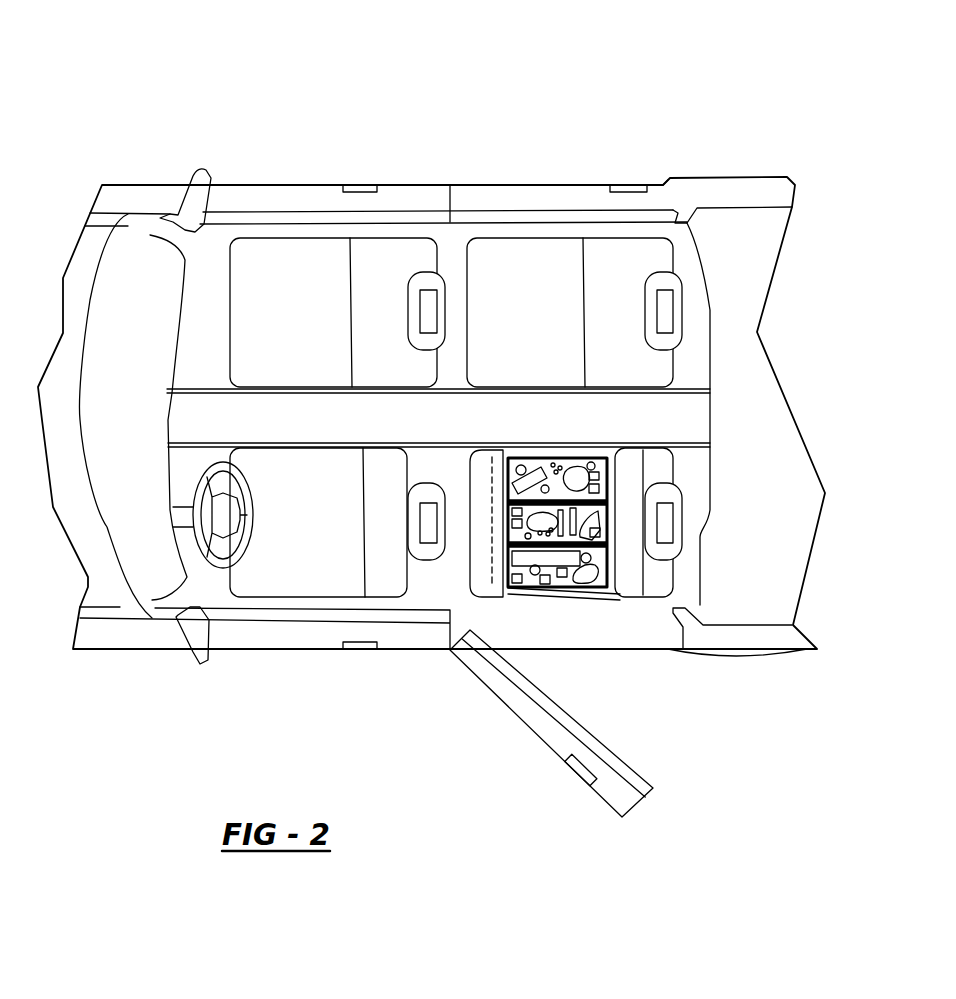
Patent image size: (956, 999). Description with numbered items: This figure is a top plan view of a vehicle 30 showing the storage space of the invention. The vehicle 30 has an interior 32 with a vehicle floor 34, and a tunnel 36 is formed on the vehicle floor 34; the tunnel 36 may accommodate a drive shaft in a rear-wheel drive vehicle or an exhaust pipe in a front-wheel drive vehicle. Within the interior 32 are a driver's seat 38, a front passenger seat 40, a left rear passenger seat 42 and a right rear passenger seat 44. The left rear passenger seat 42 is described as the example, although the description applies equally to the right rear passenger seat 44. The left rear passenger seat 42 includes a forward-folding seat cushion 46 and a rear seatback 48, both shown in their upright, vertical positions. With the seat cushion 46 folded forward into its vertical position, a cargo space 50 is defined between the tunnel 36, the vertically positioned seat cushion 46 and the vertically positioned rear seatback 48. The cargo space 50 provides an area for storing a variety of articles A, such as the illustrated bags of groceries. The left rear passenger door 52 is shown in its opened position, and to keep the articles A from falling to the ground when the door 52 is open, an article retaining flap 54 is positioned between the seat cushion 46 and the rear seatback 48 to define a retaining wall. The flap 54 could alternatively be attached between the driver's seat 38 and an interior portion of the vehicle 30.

The vehicle 30 is at (244, 129).
The interior 32 is at (450, 237).
The vehicle floor 34 is at (212, 260).
The tunnel 36 is at (540, 413).
The driver's seat 38 is at (320, 547).
The front passenger seat 40 is at (298, 283).
The left rear passenger seat 42 is at (653, 577).
The right rear passenger seat 44 is at (658, 250).
The forward-folding seat cushion 46 is at (480, 573).
The rear seatback 48 is at (653, 468).
The cargo space 50 is at (612, 587).
The left rear passenger door 52 is at (620, 795).
The article retaining flap 54 is at (543, 597).
The articles A is at (583, 463).